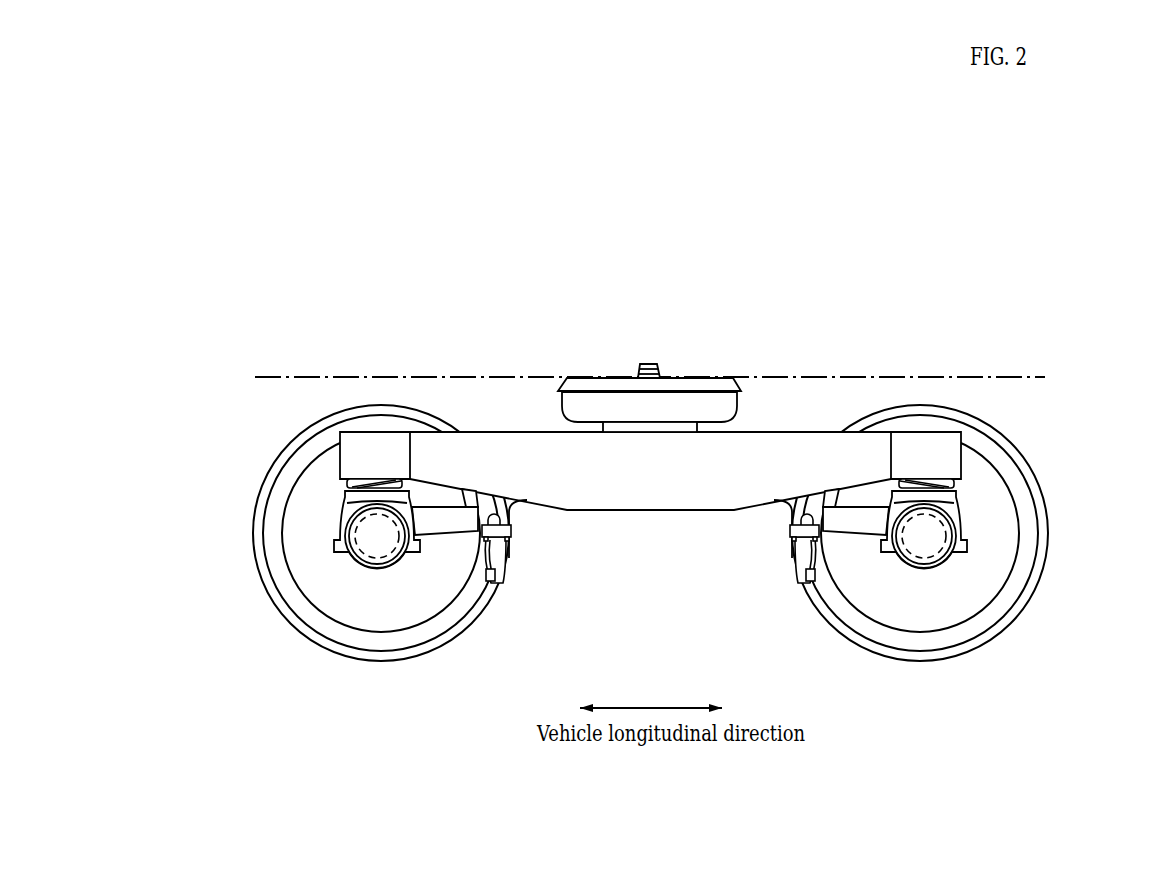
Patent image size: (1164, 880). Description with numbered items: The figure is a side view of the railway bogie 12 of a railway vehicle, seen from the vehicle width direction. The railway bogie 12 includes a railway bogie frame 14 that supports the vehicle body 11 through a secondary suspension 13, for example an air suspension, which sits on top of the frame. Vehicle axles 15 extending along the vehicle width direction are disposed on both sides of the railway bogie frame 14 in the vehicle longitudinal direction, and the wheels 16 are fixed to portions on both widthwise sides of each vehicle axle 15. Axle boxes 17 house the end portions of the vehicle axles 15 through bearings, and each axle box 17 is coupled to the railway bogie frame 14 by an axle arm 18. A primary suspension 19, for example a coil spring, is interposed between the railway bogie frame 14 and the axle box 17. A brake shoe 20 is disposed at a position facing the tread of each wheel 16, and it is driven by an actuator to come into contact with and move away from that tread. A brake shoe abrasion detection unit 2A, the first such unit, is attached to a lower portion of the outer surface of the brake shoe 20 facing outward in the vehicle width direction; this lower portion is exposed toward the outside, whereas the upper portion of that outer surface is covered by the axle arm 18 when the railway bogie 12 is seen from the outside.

The vehicle body 11 is at (1013, 378).
The railway bogie 12 is at (316, 335).
The secondary suspension 13 is at (712, 383).
The railway bogie frame 14 is at (645, 502).
The vehicle axle 15 is at (360, 553).
The wheel 16 is at (293, 438).
The axle box 17 is at (347, 517).
The axle arm 18 is at (443, 537).
The primary suspension 19 is at (343, 483).
The brake shoe 20 is at (508, 557).
The brake shoe abrasion detection unit 2A is at (490, 587).